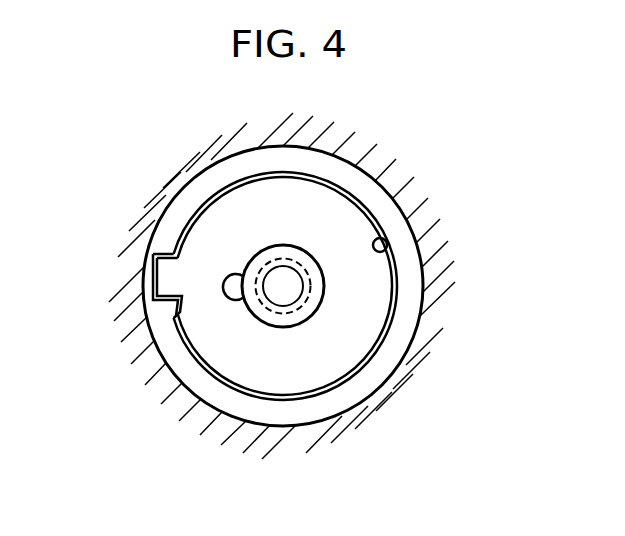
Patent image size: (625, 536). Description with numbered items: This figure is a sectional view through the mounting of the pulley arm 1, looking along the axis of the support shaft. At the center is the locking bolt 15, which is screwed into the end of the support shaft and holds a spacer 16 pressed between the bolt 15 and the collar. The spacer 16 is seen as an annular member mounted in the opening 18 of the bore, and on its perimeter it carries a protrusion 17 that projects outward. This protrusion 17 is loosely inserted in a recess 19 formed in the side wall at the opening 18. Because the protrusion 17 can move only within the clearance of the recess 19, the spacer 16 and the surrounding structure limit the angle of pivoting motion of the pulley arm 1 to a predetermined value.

The pulley arm 1 is at (433, 283).
The locking bolt 15 is at (310, 305).
The spacer 16 is at (217, 232).
The protrusion 17 is at (167, 292).
The opening 18 is at (390, 247).
The recess 19 is at (150, 258).